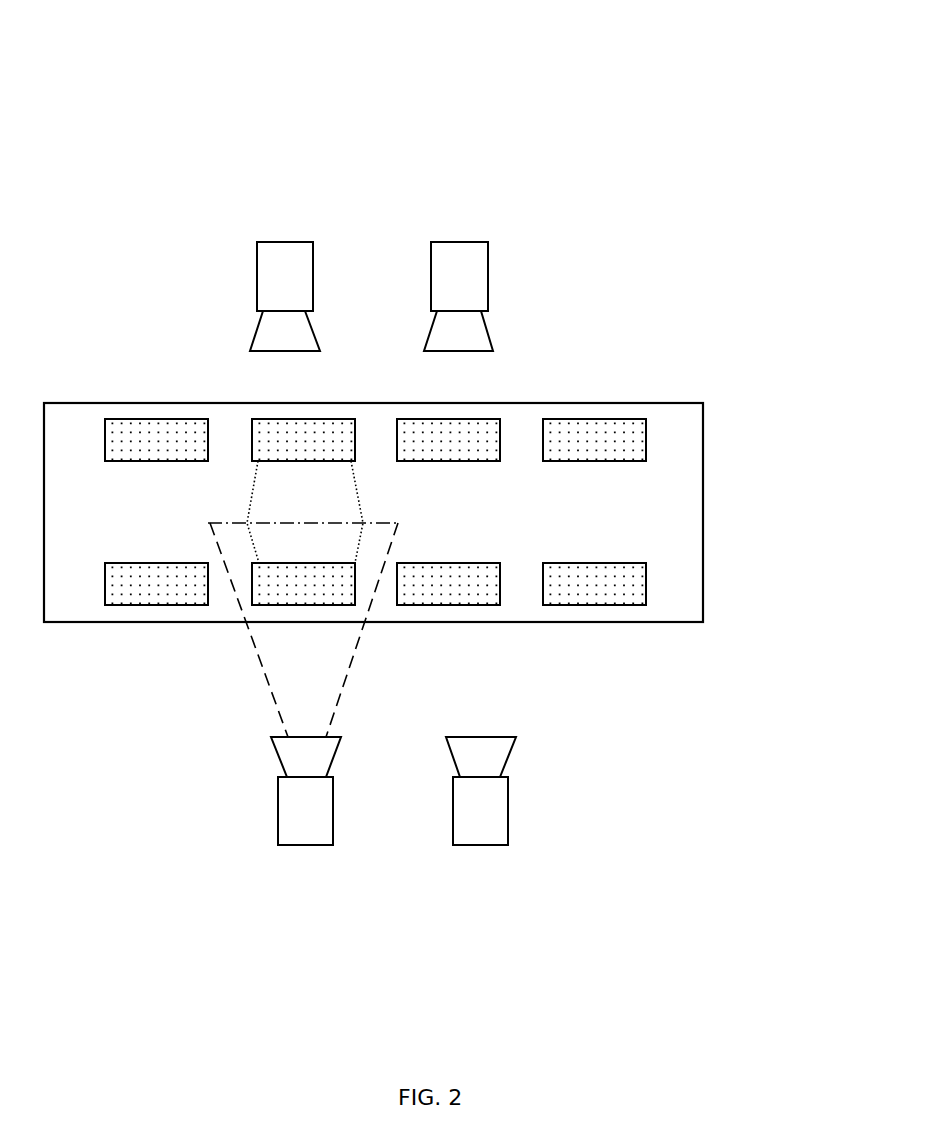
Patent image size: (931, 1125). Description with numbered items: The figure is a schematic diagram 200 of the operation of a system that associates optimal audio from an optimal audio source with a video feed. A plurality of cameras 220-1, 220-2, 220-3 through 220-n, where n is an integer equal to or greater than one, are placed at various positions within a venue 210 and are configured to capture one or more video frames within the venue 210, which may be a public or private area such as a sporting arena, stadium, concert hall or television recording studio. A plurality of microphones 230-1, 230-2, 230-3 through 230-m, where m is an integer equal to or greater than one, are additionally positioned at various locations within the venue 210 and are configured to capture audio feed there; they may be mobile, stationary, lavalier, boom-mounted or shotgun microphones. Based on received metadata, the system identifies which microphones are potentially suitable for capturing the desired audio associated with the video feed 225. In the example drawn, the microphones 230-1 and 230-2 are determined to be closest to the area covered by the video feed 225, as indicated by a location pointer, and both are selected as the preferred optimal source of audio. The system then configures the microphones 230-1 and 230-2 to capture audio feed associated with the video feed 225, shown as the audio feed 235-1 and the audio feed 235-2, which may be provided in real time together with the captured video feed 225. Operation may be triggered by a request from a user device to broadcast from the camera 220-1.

The schematic diagram 200 is at (697, 85).
The venue 210 is at (653, 403).
The camera 220-1 is at (332, 737).
The camera 220-2 is at (507, 737).
The camera 220-3 is at (282, 242).
The camera 220-n is at (458, 242).
The microphone 230-1 is at (262, 605).
The microphone 230-2 is at (303, 419).
The microphone 230-3 is at (138, 419).
The microphone 230-m is at (623, 563).
The audio feed 235-1 is at (265, 547).
The audio feed 235-2 is at (353, 489).
The video feed 225 is at (387, 527).